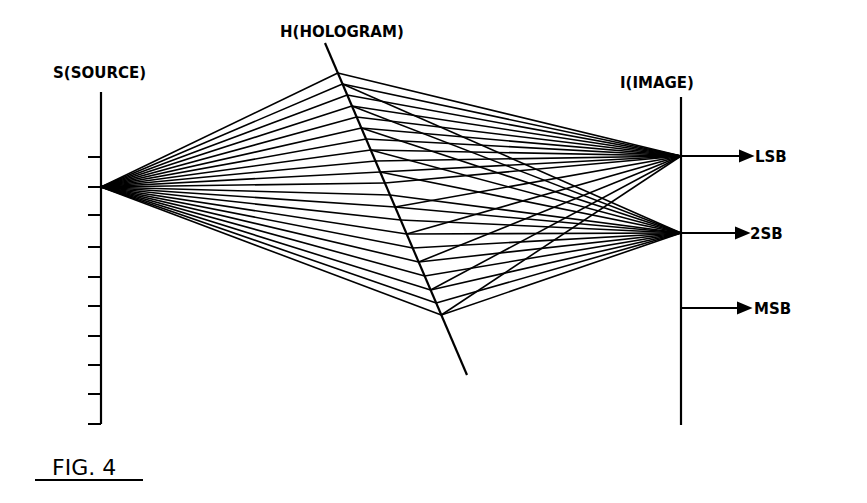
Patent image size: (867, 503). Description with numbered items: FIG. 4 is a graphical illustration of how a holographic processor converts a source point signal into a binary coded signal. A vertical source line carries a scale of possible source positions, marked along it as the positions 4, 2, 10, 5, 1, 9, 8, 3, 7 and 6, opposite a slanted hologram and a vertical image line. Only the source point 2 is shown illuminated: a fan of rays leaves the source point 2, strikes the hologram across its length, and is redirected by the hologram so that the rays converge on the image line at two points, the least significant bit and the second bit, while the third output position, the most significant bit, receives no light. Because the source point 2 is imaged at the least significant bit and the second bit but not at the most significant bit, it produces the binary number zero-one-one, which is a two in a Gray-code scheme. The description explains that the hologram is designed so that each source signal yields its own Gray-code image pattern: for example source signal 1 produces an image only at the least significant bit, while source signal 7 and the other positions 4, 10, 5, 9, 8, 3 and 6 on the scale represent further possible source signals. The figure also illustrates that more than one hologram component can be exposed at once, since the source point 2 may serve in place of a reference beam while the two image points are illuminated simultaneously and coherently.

The source position 4 is at (88, 157).
The source point 2 is at (88, 187).
The source position 10 is at (85, 215).
The source position 5 is at (88, 247).
The source signal 1 is at (89, 277).
The source position 9 is at (88, 306).
The source position 8 is at (88, 336).
The source position 3 is at (88, 365).
The source signal 7 is at (88, 394).
The source position 6 is at (88, 424).